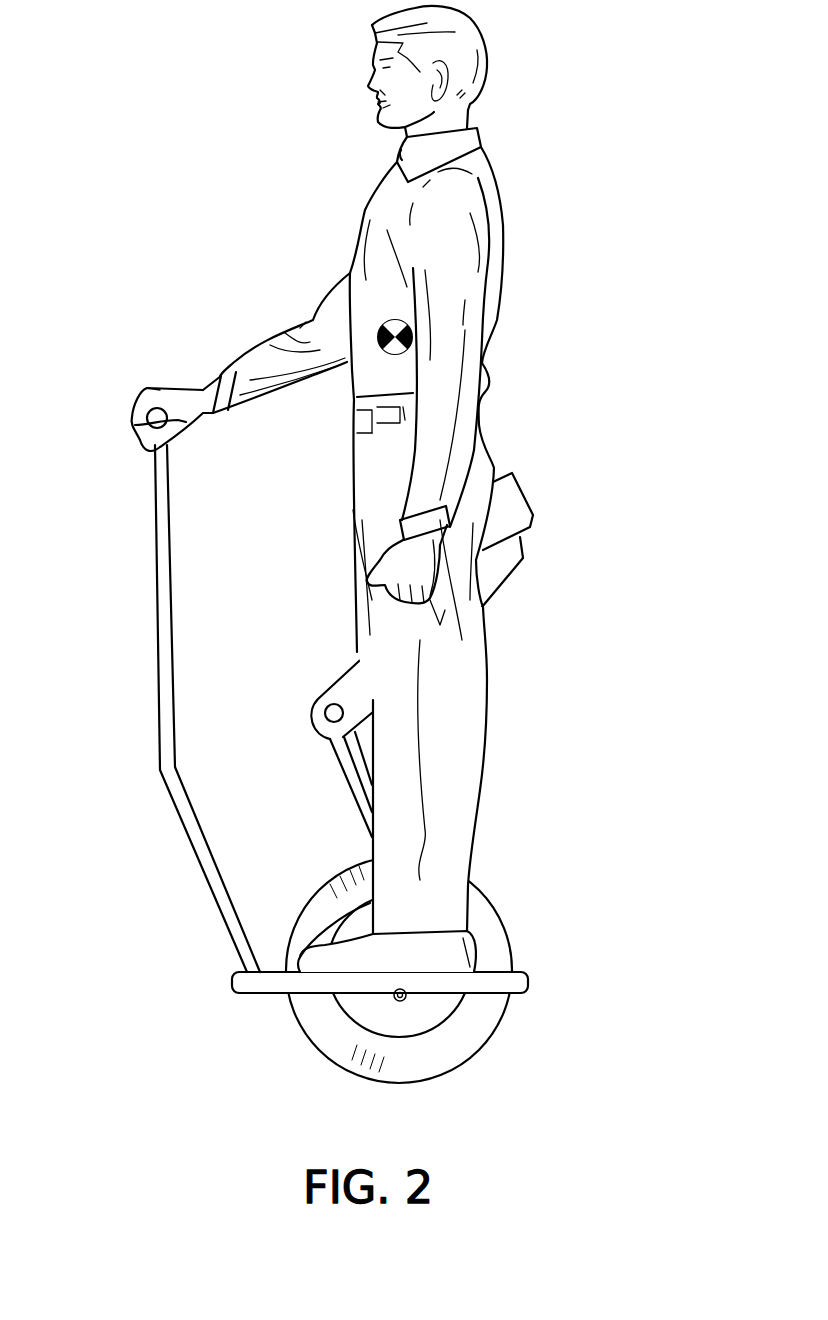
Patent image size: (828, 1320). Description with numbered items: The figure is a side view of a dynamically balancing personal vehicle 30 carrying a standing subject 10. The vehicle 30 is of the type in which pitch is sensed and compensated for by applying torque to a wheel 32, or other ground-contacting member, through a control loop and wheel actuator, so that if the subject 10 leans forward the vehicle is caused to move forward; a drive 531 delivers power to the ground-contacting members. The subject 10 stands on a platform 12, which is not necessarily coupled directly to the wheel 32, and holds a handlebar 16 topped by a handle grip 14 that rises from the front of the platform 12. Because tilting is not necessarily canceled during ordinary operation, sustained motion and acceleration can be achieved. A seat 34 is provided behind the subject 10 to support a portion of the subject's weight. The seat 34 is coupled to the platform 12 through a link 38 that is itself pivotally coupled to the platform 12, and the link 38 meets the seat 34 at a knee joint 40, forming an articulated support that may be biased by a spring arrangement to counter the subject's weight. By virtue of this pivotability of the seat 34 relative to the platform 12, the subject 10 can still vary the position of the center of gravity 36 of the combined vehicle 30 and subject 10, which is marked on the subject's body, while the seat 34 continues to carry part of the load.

The subject 10 is at (492, 186).
The platform 12 is at (532, 982).
The handle grip 14 is at (150, 425).
The handlebar 16 is at (173, 625).
The personal vehicle 30 is at (611, 885).
The wheel 32 is at (437, 1015).
The seat 34 is at (522, 517).
The center of gravity 36 is at (380, 345).
The link 38 is at (347, 783).
The knee joint 40 is at (324, 713).
The drive 531 is at (402, 1001).